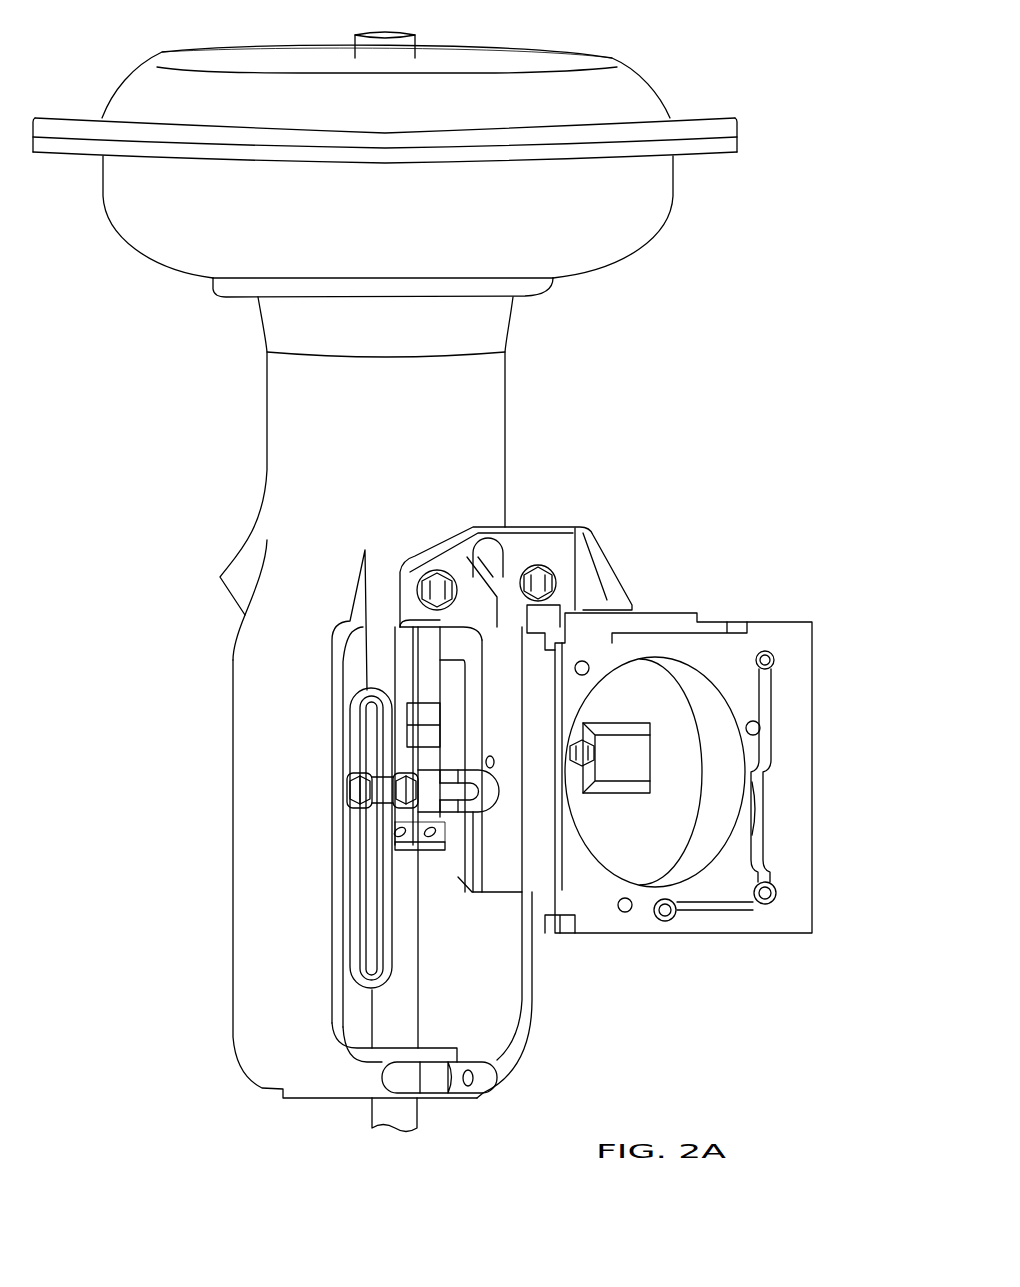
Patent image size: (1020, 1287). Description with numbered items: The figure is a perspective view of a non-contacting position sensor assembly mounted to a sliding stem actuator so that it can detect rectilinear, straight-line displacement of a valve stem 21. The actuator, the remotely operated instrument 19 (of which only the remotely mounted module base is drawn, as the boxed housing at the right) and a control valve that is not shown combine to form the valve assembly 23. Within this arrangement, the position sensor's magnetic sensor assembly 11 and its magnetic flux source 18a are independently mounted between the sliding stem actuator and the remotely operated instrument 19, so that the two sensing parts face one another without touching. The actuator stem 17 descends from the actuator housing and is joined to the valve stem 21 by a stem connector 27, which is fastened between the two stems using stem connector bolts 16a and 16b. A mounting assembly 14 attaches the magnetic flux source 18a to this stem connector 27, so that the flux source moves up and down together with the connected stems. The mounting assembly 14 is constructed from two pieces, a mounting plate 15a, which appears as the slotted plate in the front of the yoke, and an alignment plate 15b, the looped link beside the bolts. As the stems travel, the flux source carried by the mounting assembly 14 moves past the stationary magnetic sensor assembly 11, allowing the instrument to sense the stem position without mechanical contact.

The magnetic sensor assembly 11 is at (403, 753).
The mounting assembly 14 is at (351, 809).
The mounting plate 15a is at (340, 972).
The alignment plate 15b is at (478, 802).
The stem connector bolt 16a is at (396, 836).
The stem connector bolt 16b is at (430, 840).
The actuator stem 17 is at (370, 650).
The magnetic flux source 18a is at (440, 717).
The remotely operated instrument 19 is at (813, 620).
The valve stem 21 is at (400, 1033).
The valve assembly 23 is at (262, 457).
The stem connector 27 is at (443, 847).